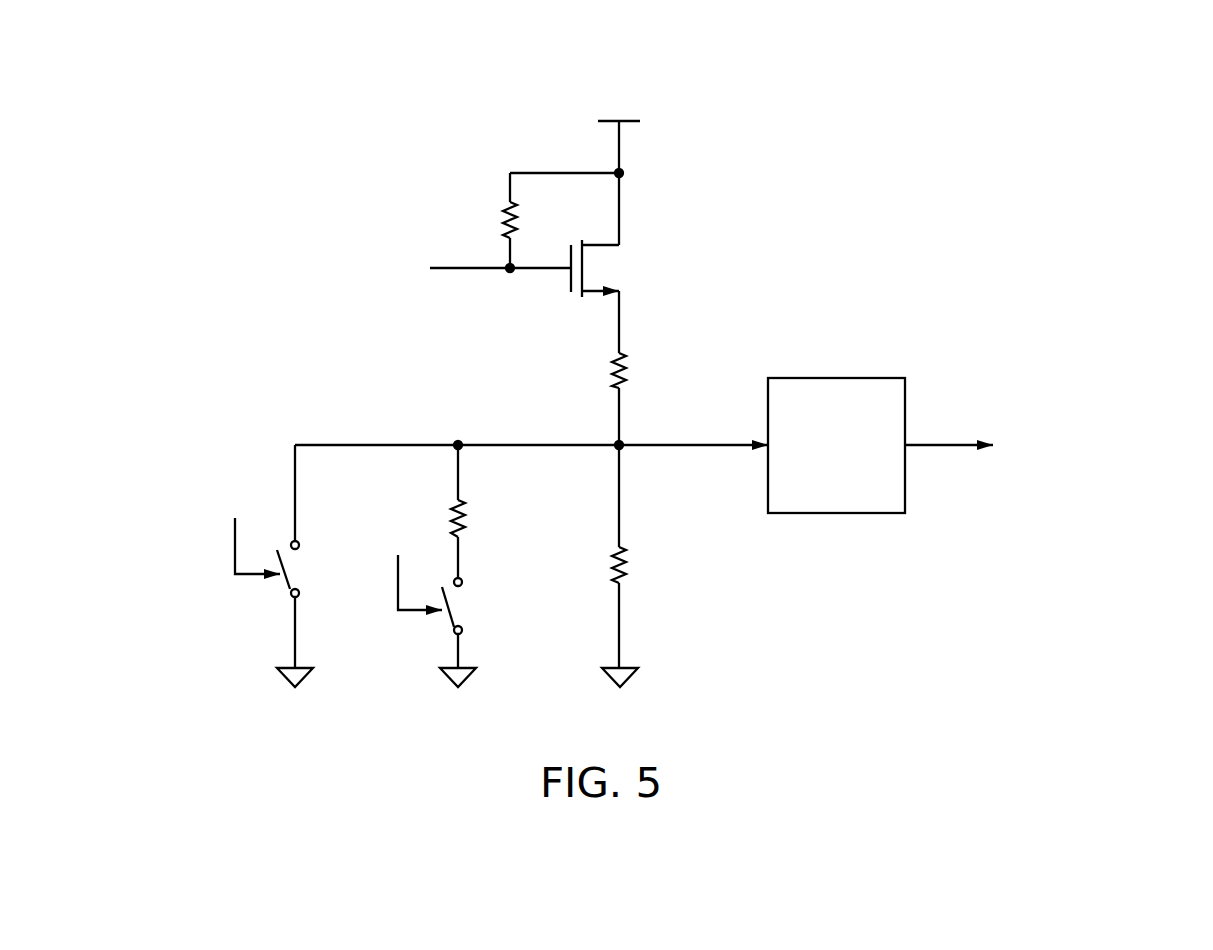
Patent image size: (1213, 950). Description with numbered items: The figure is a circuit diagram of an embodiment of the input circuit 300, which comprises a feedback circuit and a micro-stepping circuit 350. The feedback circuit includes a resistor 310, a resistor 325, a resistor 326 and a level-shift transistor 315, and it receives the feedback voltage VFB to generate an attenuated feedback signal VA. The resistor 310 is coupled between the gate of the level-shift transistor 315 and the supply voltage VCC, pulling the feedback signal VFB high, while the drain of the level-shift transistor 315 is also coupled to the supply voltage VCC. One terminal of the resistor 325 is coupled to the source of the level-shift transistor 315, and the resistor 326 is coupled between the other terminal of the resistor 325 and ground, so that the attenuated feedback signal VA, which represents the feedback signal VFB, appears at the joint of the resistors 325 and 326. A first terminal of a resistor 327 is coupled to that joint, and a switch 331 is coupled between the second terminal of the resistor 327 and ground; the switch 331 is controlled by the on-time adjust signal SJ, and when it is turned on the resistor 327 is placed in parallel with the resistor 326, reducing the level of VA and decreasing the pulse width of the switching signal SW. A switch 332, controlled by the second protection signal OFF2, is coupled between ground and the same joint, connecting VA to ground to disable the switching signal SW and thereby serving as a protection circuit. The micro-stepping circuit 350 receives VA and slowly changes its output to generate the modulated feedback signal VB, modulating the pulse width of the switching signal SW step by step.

The input circuit 300 is at (1157, 131).
The resistor 310 is at (484, 220).
The level-shift transistor 315 is at (620, 296).
The resistor 325 is at (589, 399).
The resistor 326 is at (640, 566).
The resistor 327 is at (484, 511).
The switch 331 is at (478, 632).
The switch 332 is at (314, 566).
The micro-stepping circuit 350 is at (836, 426).